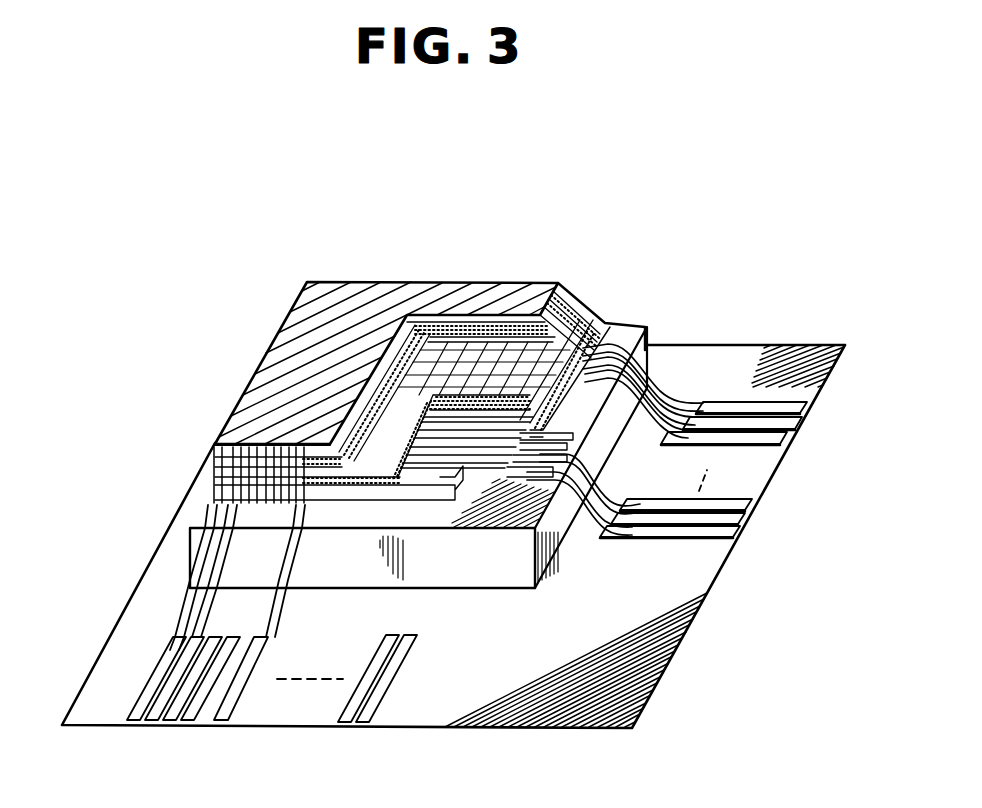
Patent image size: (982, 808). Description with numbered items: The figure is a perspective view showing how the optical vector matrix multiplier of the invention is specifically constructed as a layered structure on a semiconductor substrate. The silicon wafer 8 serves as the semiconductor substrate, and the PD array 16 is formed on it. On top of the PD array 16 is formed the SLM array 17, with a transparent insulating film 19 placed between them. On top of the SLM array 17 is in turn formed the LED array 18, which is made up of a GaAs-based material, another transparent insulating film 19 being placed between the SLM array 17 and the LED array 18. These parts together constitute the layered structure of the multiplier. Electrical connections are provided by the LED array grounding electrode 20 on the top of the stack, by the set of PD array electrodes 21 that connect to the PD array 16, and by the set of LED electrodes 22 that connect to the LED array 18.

The silicon wafer 8 is at (664, 686).
The PD array 16 is at (487, 458).
The SLM array 17 is at (361, 458).
The LED array 18 is at (215, 447).
The transparent insulation film 19 is at (478, 398).
The LED array grounding electrode 20 is at (298, 336).
The PD array electrodes 21 is at (735, 408).
The LED electrodes 22 is at (153, 683).